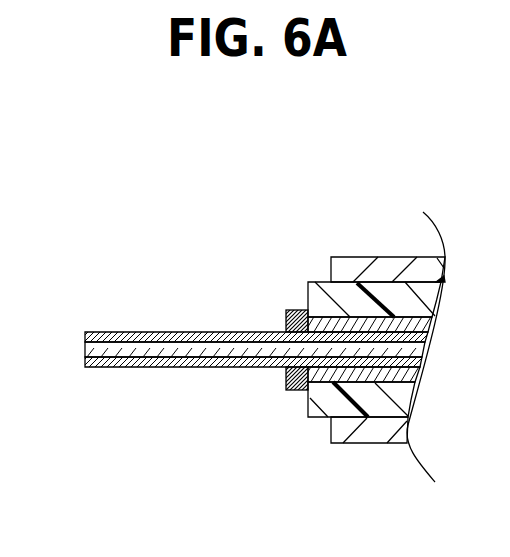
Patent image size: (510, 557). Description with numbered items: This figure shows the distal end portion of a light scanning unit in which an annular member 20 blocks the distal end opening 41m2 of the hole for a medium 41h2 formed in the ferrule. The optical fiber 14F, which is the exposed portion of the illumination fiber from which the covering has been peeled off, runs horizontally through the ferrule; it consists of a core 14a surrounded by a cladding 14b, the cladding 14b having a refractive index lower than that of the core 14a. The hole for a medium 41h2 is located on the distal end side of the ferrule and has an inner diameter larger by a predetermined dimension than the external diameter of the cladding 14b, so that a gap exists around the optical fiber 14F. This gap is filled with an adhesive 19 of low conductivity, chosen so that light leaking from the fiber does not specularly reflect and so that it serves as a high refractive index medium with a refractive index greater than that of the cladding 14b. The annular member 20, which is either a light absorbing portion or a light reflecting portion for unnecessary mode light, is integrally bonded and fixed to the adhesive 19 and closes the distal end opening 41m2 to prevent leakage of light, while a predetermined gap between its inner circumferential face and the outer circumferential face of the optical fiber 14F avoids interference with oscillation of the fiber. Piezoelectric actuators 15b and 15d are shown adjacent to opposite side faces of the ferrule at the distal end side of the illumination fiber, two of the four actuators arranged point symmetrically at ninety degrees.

The optical fiber 14F is at (232, 262).
The core 14a is at (83, 352).
The cladding 14b is at (137, 332).
The distal end opening 41m2 is at (297, 362).
The adhesive 19 is at (401, 268).
The actuator 15b is at (357, 268).
The actuator 15d is at (398, 444).
The hole for a medium 41h2 is at (360, 354).
The annular member 20 is at (287, 382).